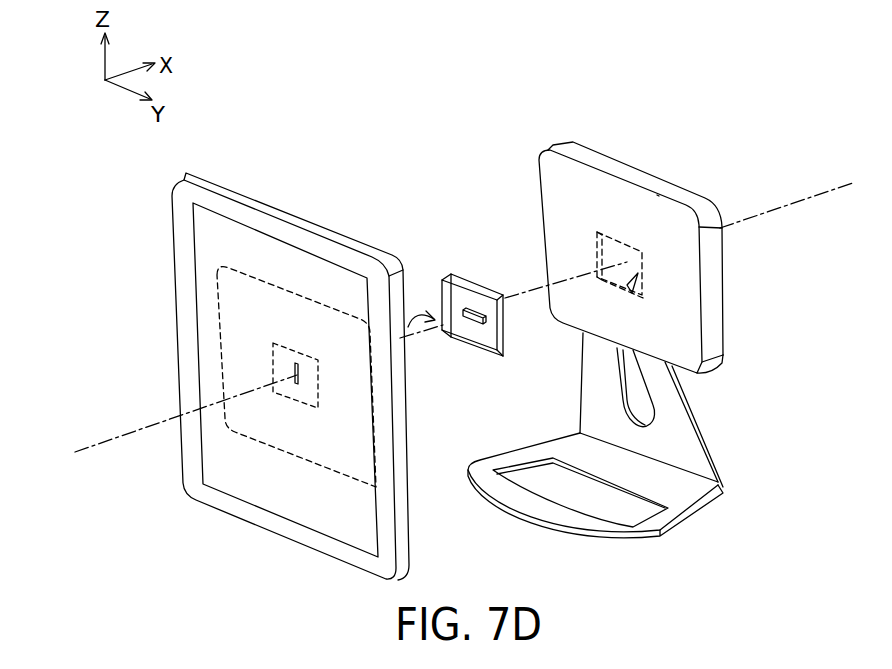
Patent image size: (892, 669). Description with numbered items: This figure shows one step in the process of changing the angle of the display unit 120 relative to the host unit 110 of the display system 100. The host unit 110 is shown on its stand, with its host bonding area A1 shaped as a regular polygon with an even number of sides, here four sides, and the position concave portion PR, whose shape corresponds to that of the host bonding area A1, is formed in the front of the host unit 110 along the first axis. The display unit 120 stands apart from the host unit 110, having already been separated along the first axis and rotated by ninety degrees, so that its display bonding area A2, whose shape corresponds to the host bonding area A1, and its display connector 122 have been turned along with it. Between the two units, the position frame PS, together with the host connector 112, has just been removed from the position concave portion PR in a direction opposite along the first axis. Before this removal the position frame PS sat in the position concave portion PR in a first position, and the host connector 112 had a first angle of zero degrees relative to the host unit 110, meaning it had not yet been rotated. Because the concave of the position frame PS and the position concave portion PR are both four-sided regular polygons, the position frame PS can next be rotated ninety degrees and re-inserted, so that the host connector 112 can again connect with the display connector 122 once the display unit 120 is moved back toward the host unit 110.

The display system 100 is at (823, 603).
The host unit 110 is at (592, 162).
The host connector 112 is at (468, 308).
The display unit 120 is at (225, 190).
The display connector 122 is at (296, 363).
The host bonding area A1 is at (657, 195).
The display bonding area A2 is at (332, 305).
The position frame PS is at (473, 345).
The position concave portion PR is at (630, 291).